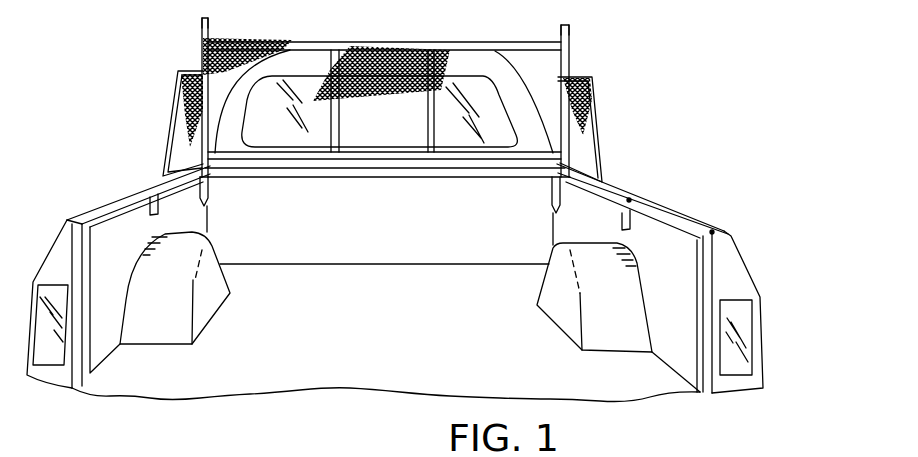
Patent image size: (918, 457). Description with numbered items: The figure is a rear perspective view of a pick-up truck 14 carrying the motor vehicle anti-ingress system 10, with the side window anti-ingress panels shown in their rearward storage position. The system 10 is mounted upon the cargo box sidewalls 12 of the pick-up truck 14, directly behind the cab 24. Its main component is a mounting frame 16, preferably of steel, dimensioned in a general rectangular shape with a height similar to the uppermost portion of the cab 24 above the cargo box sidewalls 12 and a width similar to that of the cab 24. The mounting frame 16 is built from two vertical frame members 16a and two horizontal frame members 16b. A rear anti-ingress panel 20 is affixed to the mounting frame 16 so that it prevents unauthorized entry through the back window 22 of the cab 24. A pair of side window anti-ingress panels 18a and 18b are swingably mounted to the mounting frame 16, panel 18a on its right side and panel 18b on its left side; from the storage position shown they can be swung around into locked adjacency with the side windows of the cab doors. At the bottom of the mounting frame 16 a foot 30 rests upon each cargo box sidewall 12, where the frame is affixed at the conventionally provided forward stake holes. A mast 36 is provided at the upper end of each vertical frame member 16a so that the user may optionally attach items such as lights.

The motor vehicle anti-ingress system 10 is at (409, 109).
The cargo box sidewalls 12 is at (116, 198).
The pick-up truck 14 is at (416, 282).
The mounting frame 16 is at (395, 90).
The vertical frame members 16a is at (202, 41).
The horizontal frame members 16b is at (472, 46).
The side window anti-ingress panel 18a is at (600, 126).
The side window anti-ingress panel 18b is at (178, 103).
The rear anti-ingress panel 20 is at (371, 60).
The back window 22 is at (483, 145).
The cab 24 is at (384, 113).
The foot 30 is at (207, 182).
The mast 36 is at (208, 26).